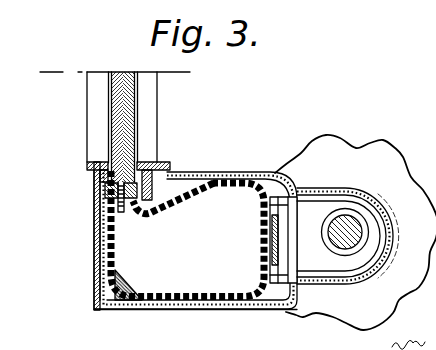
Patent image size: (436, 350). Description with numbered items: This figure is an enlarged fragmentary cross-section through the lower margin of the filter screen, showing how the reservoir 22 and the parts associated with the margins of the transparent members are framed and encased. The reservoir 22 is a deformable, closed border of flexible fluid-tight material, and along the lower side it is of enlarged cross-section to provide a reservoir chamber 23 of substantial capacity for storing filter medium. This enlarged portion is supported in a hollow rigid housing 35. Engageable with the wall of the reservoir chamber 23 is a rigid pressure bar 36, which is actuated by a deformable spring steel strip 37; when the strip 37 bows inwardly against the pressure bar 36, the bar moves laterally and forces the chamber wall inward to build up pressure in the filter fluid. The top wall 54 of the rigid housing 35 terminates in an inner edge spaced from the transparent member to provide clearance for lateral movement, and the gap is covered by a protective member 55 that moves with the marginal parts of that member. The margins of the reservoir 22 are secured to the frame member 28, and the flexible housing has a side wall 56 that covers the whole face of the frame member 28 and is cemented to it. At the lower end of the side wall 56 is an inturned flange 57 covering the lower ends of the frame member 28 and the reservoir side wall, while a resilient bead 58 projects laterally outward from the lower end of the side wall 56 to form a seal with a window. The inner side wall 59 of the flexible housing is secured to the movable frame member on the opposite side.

The reservoir 22 is at (138, 305).
The reservoir chamber 23 is at (226, 279).
The frame member 28 is at (96, 283).
The rigid housing 35 is at (261, 306).
The pressure bar 36 is at (268, 258).
The spring steel strip 37 is at (271, 245).
The top wall 54 is at (189, 172).
The protective member 55 is at (166, 172).
The side wall 56 is at (95, 257).
The inturned flange 57 is at (98, 143).
The resilient bead 58 is at (90, 168).
The inner side wall 59 is at (180, 198).